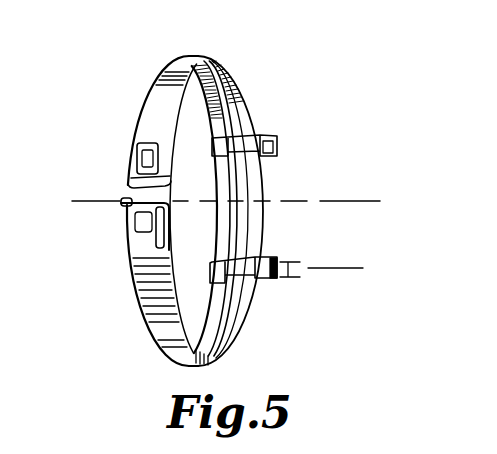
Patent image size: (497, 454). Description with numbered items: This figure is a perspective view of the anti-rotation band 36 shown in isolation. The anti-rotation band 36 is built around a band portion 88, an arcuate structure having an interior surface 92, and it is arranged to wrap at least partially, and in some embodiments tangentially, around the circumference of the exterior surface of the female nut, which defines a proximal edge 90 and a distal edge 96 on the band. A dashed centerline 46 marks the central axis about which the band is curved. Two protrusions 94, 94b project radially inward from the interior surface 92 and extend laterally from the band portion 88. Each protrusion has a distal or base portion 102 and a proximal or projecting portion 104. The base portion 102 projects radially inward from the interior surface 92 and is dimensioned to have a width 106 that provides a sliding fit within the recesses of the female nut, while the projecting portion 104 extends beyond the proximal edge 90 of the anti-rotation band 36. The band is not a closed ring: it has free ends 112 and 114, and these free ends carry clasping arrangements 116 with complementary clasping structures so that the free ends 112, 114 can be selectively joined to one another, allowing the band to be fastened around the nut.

The anti-rotation band 36 is at (249, 83).
The axis 46 is at (336, 201).
The band portion 88 is at (159, 73).
The proximal edge 90 is at (213, 352).
The interior surface 92 is at (243, 117).
The protrusion 94 is at (278, 138).
The second tab 94b is at (280, 262).
The distal edge 96 is at (153, 342).
The base portion 102 is at (247, 307).
The projecting portion 104 is at (300, 277).
The width 106 is at (359, 272).
The free end 112 is at (130, 184).
The free end 114 is at (118, 224).
The clasping arrangement 116 is at (88, 200).